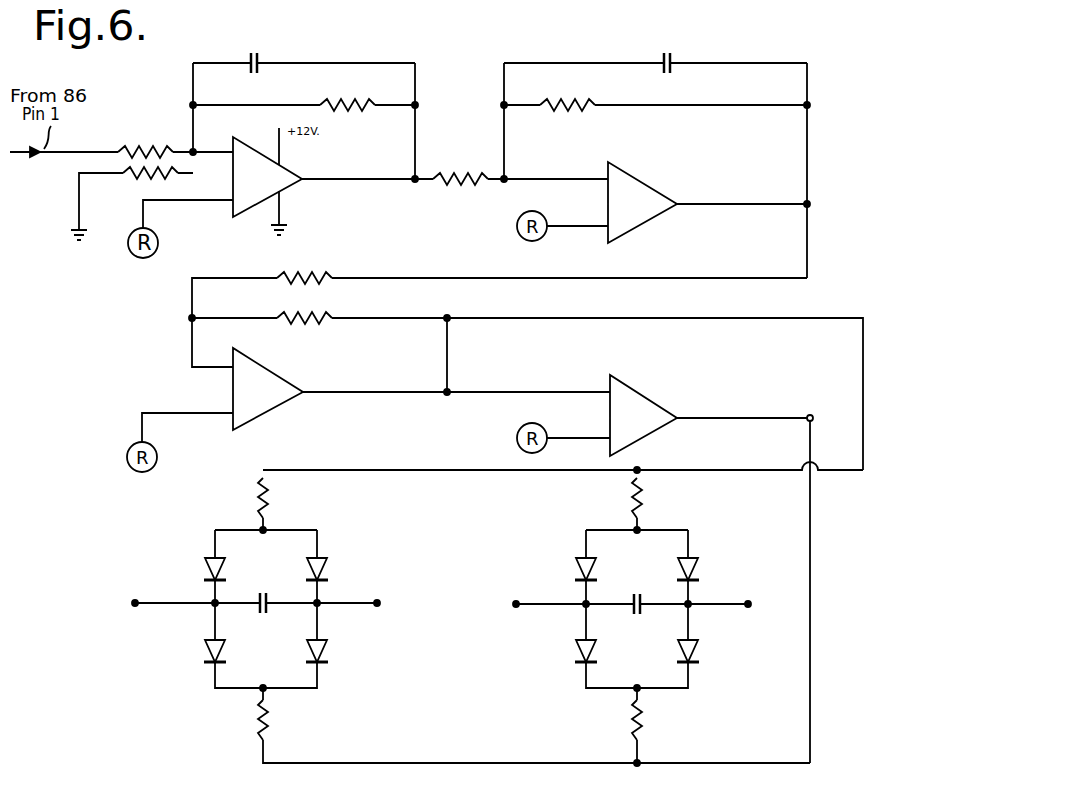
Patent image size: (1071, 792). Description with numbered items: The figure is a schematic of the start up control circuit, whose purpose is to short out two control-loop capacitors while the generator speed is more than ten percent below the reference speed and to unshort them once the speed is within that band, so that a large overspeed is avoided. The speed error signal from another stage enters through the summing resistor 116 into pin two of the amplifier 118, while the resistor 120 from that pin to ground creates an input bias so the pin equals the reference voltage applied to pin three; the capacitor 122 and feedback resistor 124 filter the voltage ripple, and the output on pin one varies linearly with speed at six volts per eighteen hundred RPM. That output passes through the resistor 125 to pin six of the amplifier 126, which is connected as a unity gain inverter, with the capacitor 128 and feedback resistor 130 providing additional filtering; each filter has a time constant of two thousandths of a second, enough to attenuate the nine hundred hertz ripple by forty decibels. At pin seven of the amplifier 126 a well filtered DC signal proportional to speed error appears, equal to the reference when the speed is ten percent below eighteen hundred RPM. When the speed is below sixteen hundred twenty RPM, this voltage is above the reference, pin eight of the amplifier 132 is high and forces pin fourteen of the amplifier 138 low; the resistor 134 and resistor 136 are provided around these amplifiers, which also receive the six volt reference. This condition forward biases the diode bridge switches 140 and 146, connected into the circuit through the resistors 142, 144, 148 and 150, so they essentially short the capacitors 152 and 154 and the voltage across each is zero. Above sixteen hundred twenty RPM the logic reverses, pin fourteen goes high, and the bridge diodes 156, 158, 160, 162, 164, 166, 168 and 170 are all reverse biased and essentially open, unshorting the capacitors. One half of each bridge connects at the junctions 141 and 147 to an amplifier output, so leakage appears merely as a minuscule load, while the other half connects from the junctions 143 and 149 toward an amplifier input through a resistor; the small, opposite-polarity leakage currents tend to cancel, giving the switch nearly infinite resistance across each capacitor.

The summing resistor 116 is at (169, 129).
The amplifier 118 is at (282, 183).
The resistor 120 is at (146, 180).
The capacitor 122 is at (259, 56).
The feedback resistor 124 is at (348, 98).
The resistor 125 is at (477, 150).
The amplifier 126 is at (642, 193).
The capacitor 128 is at (671, 58).
The feedback resistor 130 is at (578, 104).
The amplifier 132 is at (266, 398).
The resistor 134 is at (313, 272).
The resistor 136 is at (322, 316).
The amplifier 138 is at (640, 400).
The diode bridge switch 140 is at (198, 535).
The junction 141 is at (373, 600).
The resistor 142 is at (271, 501).
The junction 143 is at (135, 600).
The resistor 144 is at (258, 720).
The diode bridge switch 146 is at (702, 537).
The junction 147 is at (742, 600).
The resistor 148 is at (645, 501).
The junction 149 is at (520, 585).
The resistor 150 is at (644, 724).
The capacitor 152 is at (283, 630).
The capacitor 154 is at (658, 632).
The bridge diode 156 is at (209, 570).
The bridge diode 158 is at (210, 645).
The bridge diode 160 is at (326, 571).
The bridge diode 162 is at (325, 647).
The bridge diode 164 is at (580, 571).
The bridge diode 166 is at (580, 646).
The bridge diode 168 is at (700, 571).
The bridge diode 170 is at (700, 646).